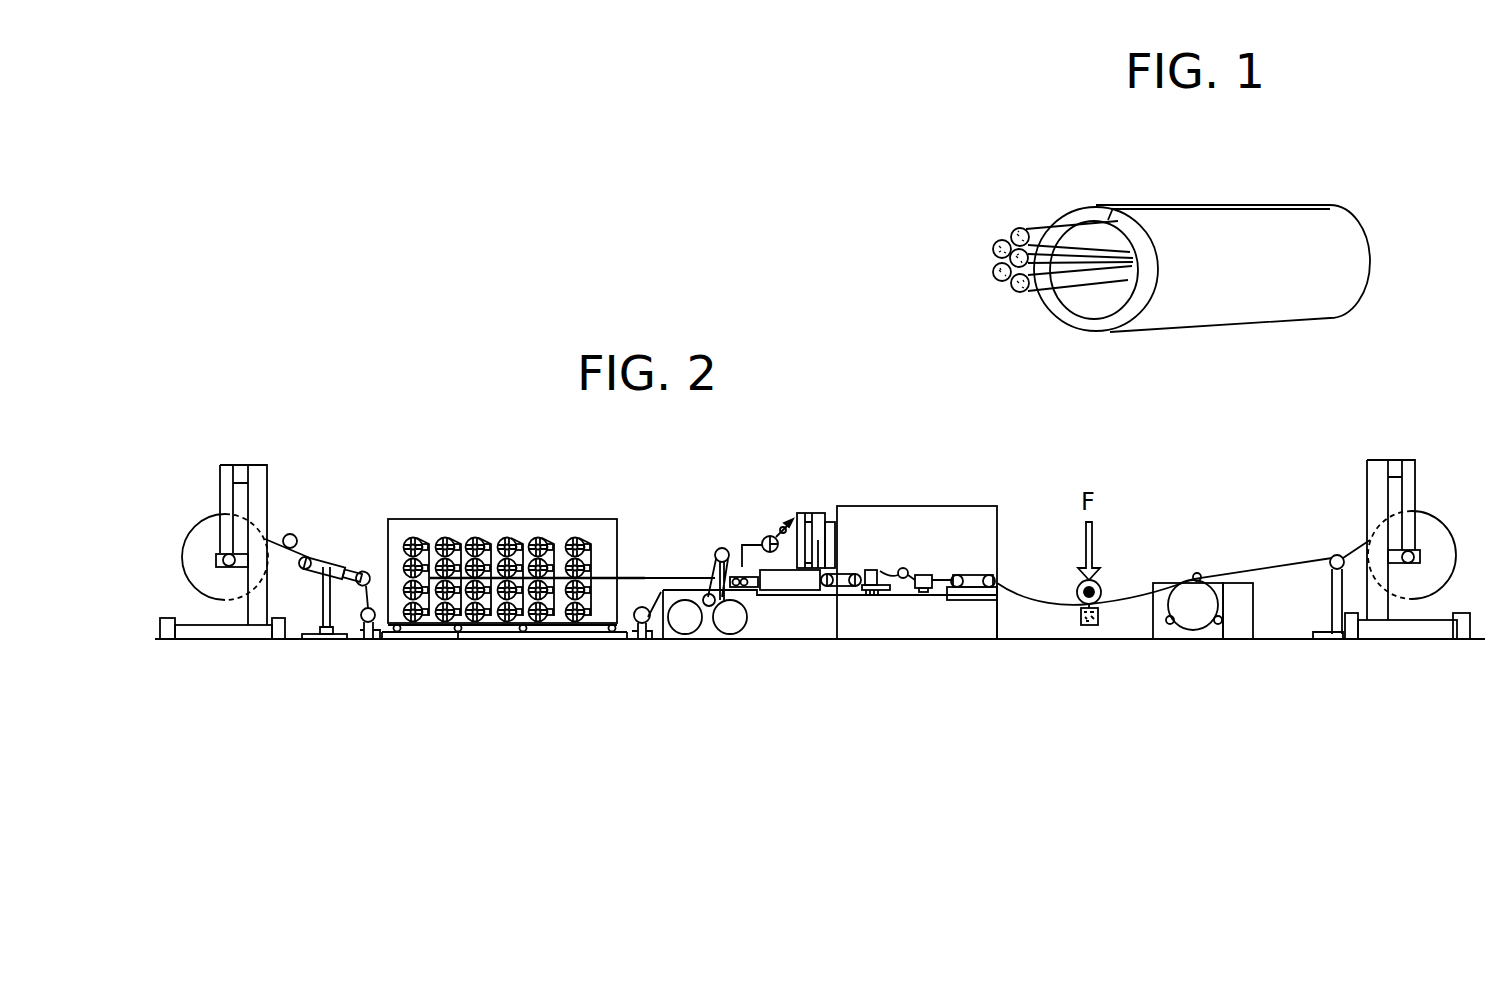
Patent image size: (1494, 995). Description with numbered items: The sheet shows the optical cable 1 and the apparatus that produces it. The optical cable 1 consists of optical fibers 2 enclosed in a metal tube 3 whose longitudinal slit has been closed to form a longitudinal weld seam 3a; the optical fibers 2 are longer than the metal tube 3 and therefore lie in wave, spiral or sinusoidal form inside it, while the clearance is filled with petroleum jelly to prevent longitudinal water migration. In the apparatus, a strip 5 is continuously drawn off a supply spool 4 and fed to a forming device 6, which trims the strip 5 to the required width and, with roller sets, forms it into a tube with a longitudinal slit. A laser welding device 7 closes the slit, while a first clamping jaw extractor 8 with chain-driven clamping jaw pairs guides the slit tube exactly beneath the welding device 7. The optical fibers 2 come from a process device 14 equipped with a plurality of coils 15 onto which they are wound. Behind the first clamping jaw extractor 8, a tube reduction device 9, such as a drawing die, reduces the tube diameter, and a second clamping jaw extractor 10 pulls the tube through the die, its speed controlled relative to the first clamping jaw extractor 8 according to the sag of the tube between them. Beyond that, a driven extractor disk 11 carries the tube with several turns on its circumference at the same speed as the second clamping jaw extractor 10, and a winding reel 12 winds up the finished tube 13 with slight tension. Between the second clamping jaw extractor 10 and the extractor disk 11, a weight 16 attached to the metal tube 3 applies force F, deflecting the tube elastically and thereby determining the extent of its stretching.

In FIG. 1, the optical cable 1 is at (1157, 252).
In FIG. 1, the optical fibers 2 is at (995, 277).
In FIG. 1, the metal tube 3 is at (1238, 312).
In FIG. 1, the longitudinal weld seam 3a is at (1170, 207).
In FIG. 2, the supply spool 4 is at (193, 563).
In FIG. 2, the strip 5 is at (300, 559).
In FIG. 2, the forming device 6 is at (722, 548).
In FIG. 2, the laser welding device 7 is at (812, 506).
In FIG. 2, the first clamping jaw extractor 8 is at (842, 575).
In FIG. 2, the tube reduction device 9 is at (924, 573).
In FIG. 2, the second clamping jaw extractor 10 is at (975, 575).
In FIG. 2, the extractor disk 11 is at (1187, 593).
In FIG. 2, the winding reel 12 is at (1440, 511).
In FIG. 2, the tube 13 is at (1281, 573).
In FIG. 2, the process device 14 is at (526, 536).
In FIG. 2, the coils 15 is at (582, 541).
In FIG. 2, the weight 16 is at (1085, 627).